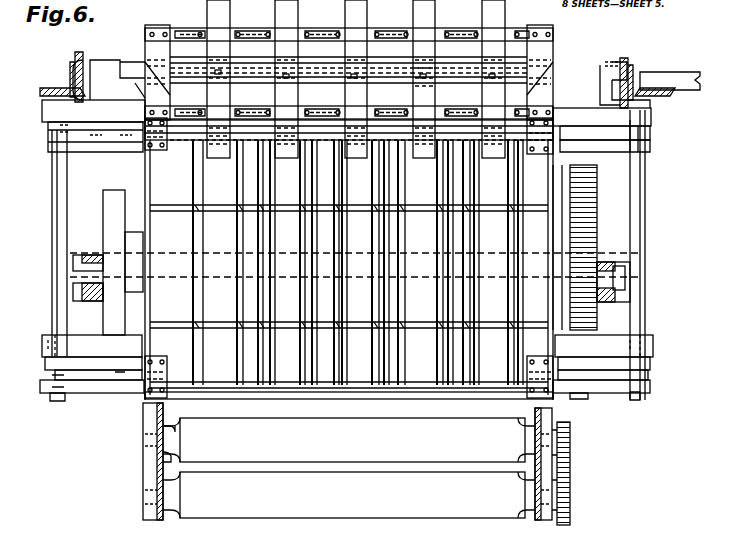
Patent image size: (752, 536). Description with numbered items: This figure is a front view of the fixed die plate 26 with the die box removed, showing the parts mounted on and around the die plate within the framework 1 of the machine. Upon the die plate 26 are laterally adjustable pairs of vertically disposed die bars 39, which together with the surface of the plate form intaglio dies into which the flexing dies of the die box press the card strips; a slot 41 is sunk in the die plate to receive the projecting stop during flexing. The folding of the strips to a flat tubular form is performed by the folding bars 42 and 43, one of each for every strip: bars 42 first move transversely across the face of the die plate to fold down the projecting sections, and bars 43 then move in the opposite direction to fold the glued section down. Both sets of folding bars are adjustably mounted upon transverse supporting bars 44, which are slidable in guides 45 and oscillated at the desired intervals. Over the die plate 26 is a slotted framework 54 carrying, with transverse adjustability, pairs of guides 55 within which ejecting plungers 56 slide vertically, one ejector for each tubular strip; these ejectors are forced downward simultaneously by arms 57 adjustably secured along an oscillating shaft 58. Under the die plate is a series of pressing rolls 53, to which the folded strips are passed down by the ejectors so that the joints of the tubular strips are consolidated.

The framework 1 is at (143, 423).
The die plate 26 is at (355, 260).
The die bars 39 is at (226, 306).
The slot 41 is at (278, 392).
The folding bars 42 is at (372, 359).
The folding bars 43 is at (338, 306).
The transverse supporting bars 44 is at (182, 140).
The guides 45 is at (145, 150).
The pressing rolls 53 is at (349, 468).
The slotted framework 54 is at (349, 72).
The guides 55 is at (200, 28).
The ejecting plungers 56 is at (423, 66).
The arms 57 is at (221, 70).
The shaft 58 is at (308, 74).